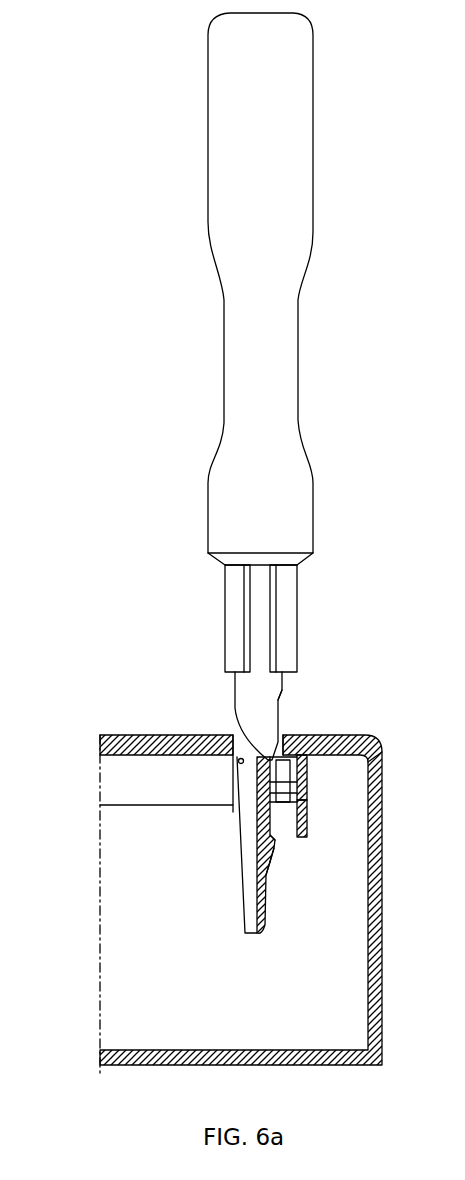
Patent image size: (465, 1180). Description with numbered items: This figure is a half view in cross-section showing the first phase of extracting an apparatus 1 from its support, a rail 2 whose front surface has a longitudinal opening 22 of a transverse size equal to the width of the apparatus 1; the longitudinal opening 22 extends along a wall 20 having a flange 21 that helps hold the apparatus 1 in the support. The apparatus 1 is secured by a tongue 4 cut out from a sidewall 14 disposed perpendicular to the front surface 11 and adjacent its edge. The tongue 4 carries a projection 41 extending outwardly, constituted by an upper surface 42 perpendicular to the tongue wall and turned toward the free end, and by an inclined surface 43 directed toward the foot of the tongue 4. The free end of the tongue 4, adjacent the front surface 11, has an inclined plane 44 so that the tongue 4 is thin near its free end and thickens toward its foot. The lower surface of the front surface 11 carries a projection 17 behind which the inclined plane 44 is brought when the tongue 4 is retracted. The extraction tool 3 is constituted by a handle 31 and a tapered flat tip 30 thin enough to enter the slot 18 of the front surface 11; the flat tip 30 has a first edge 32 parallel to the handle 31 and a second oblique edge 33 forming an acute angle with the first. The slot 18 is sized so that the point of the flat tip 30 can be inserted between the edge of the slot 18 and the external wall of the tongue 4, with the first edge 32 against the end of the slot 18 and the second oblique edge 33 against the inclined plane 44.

The apparatus 1 is at (108, 726).
The rail 2 is at (383, 1036).
The tool 3 is at (206, 221).
The tongue 4 is at (305, 778).
The front surface 11 is at (145, 735).
The sidewall 14 is at (268, 930).
The projection 17 is at (236, 762).
The slot 18 is at (236, 738).
The wall 20 is at (308, 795).
The flange 21 is at (308, 823).
The longitudinal opening 22 is at (291, 736).
The flat tip 30 is at (252, 687).
The handle 31 is at (233, 370).
The first edge 32 is at (283, 697).
The second oblique edge 33 is at (238, 806).
The projection 41 is at (271, 862).
The upper surface 42 is at (275, 848).
The inclined surface 43 is at (268, 876).
The inclined plane 44 is at (332, 734).